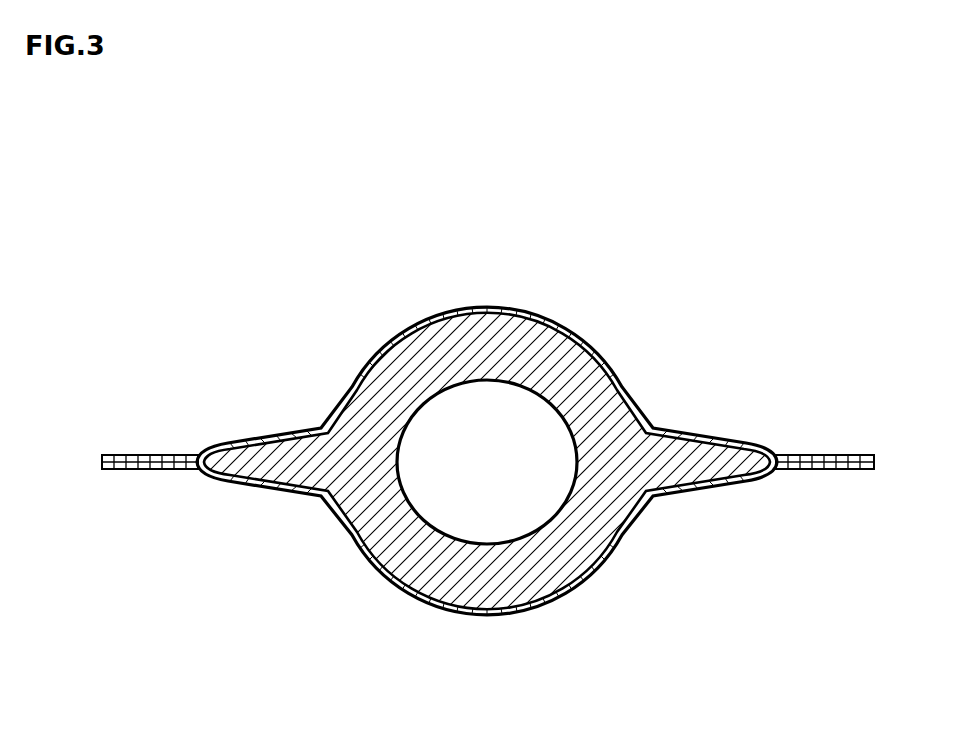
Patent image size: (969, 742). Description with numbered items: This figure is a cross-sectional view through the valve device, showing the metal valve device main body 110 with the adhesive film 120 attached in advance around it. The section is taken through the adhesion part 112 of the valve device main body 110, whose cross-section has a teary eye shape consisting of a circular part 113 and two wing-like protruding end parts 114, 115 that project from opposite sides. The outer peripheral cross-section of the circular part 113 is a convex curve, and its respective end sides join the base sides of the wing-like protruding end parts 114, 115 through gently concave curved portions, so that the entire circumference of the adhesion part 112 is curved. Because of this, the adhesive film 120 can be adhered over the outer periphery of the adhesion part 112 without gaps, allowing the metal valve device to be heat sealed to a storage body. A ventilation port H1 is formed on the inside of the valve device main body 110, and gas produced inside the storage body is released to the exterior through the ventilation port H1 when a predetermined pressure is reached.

The adhesion part 112 is at (643, 410).
The valve device main body 110 is at (492, 393).
The circular part 113 is at (323, 625).
The wing-like protruding end part 114 is at (197, 510).
The wing-like protruding end part 115 is at (772, 510).
The adhesive film 120 is at (845, 455).
The ventilation port H1 is at (449, 452).